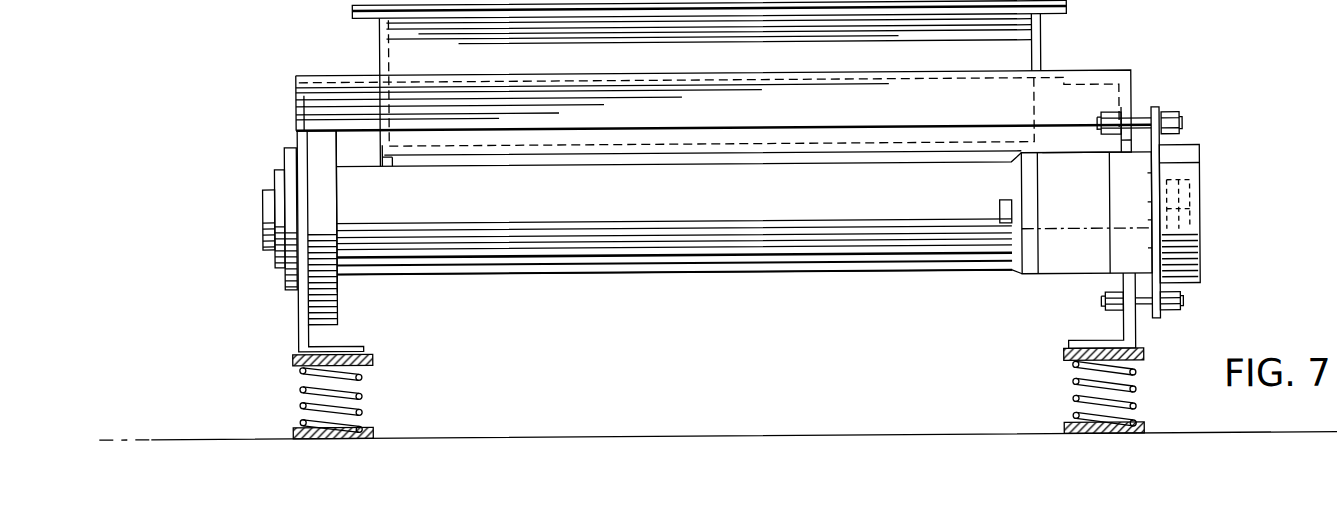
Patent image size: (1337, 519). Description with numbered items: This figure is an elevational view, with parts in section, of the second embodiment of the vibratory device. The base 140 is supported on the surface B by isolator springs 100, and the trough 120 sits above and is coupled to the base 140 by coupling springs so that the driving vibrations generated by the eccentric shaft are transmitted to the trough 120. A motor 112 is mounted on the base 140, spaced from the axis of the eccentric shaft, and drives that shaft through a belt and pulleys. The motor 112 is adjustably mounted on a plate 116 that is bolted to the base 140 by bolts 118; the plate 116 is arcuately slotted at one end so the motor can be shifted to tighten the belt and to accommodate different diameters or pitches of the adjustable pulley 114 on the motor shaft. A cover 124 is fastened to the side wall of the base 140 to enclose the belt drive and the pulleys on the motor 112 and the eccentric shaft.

The isolator springs 100 is at (299, 401).
The motor 112 is at (1024, 279).
The pulley 114 is at (1188, 180).
The plate 116 is at (1153, 118).
The bolts 118 is at (1177, 127).
The trough 120 is at (1023, 51).
The cover 124 is at (1198, 208).
The base 140 is at (298, 329).